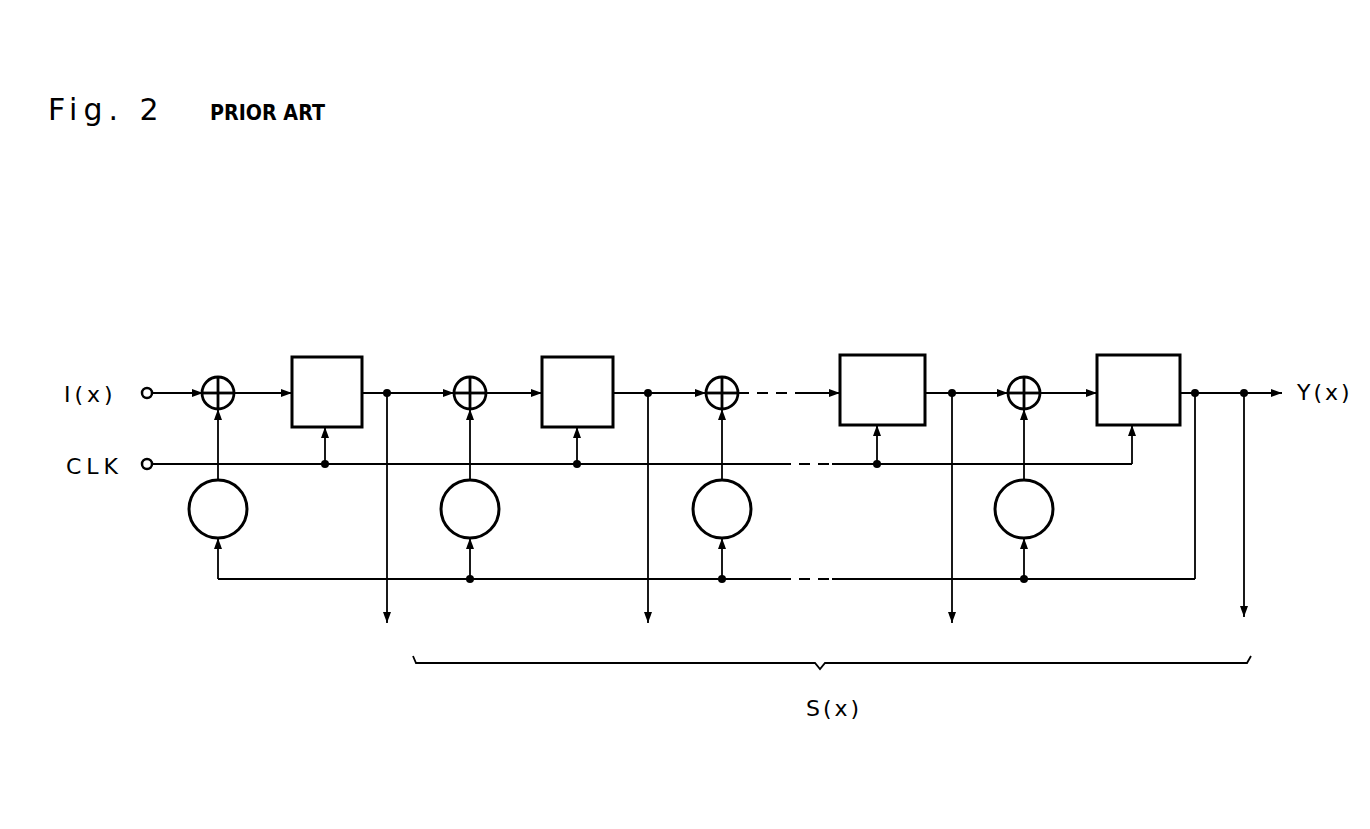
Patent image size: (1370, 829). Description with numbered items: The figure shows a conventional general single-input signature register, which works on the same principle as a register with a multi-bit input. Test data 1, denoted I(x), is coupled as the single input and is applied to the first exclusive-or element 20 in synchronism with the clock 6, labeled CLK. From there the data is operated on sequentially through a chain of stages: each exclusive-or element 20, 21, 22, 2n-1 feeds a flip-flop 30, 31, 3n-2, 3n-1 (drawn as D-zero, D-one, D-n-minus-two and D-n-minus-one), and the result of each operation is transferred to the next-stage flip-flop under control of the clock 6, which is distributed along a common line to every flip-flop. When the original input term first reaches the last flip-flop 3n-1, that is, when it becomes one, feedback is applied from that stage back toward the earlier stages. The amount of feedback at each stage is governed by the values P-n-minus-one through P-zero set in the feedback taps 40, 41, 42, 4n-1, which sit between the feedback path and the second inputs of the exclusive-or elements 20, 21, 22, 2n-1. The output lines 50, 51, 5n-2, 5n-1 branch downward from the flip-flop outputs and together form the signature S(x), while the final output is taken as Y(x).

The test data 1 is at (167, 392).
The exclusive-or element 20 is at (226, 407).
The exclusive-or element 21 is at (478, 407).
The exclusive-or element 22 is at (730, 407).
The exclusive-or element 2n-1 is at (1032, 407).
The flip-flop 30 is at (333, 357).
The flip-flop 31 is at (580, 357).
The flip-flop 3n-2 is at (880, 355).
The flip-flop 3n-1 is at (1135, 355).
The feedback tap 40 is at (247, 507).
The feedback tap 41 is at (499, 509).
The feedback tap 42 is at (751, 517).
The feedback tap 4n-1 is at (1053, 503).
The output line 50 is at (390, 592).
The output line 51 is at (651, 592).
The output line 5n-2 is at (955, 592).
The output line 5n-1 is at (1247, 590).
The clock 6 is at (178, 466).